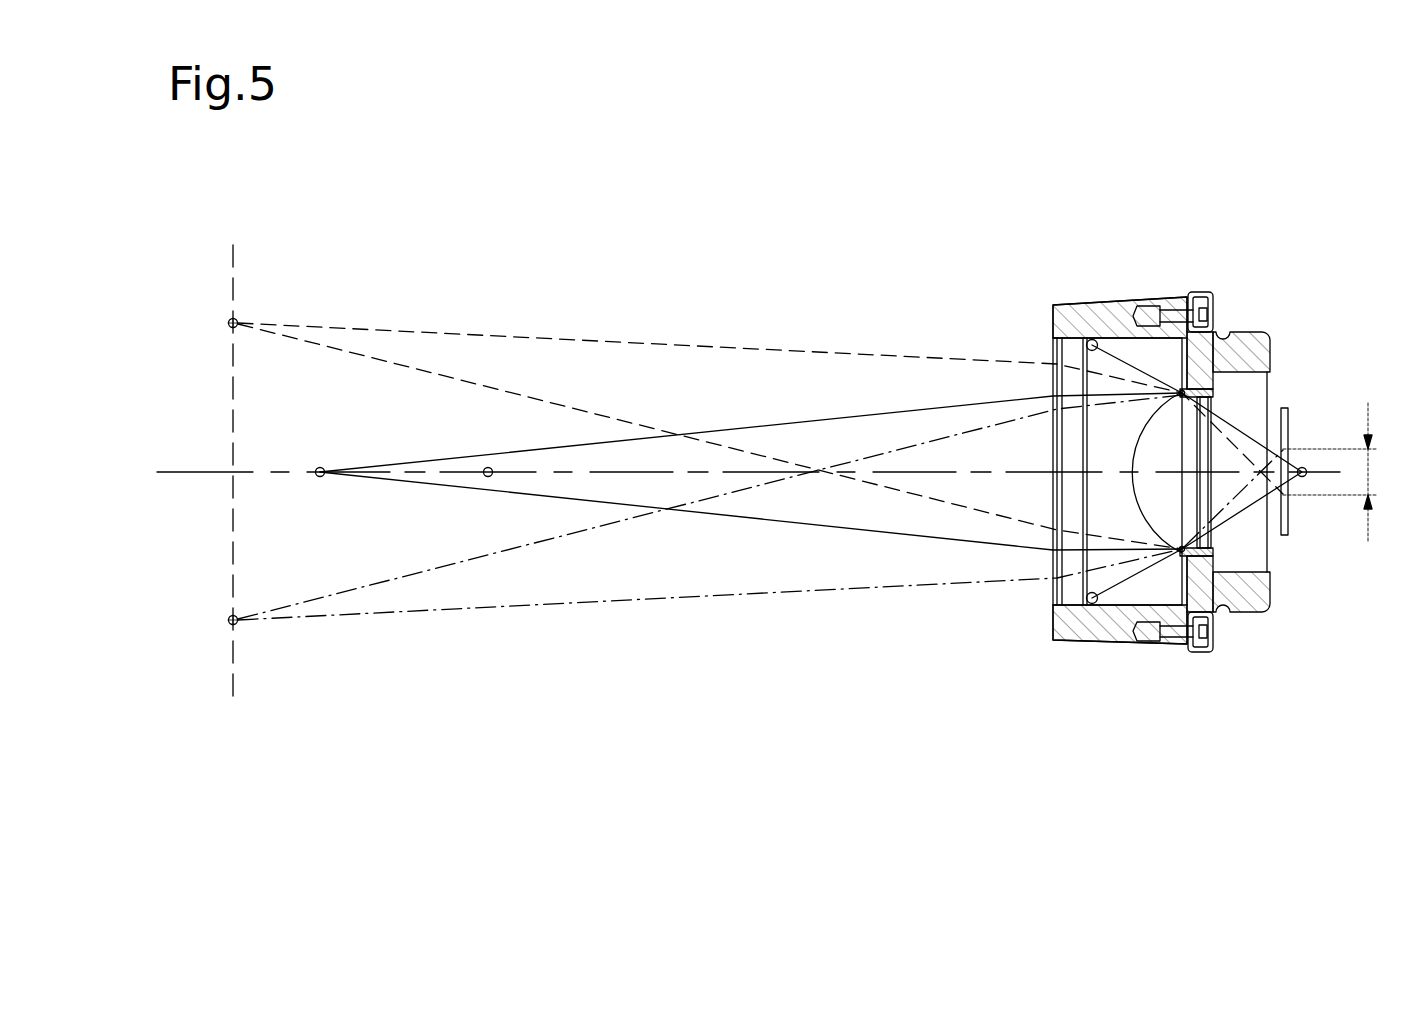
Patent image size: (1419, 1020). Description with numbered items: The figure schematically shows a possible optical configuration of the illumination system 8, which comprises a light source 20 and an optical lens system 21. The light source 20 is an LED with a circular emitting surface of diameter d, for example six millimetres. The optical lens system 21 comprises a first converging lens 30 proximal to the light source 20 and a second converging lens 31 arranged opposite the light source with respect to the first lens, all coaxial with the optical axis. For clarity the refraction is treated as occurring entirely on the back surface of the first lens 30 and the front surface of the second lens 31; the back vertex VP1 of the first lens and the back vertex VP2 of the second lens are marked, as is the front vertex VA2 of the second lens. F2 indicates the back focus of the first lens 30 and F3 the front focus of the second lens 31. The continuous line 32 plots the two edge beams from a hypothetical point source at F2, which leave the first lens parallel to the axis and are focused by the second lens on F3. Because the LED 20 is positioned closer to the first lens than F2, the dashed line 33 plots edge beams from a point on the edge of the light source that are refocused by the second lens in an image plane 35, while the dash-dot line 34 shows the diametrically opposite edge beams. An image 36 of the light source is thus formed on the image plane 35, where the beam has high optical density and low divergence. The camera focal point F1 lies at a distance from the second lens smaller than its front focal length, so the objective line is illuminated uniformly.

The illumination system 8 is at (967, 187).
The light source 20 is at (1277, 505).
The optical lens system 21 is at (1237, 655).
The first converging lens 30 is at (1172, 495).
The second converging lens 31 is at (1098, 498).
The continuous line 32 is at (925, 407).
The dashed line 33 is at (838, 351).
The dash-dot line 34 is at (555, 535).
The image plane 35 is at (234, 279).
The image of the light source 36 is at (232, 408).
The camera focal point F1 is at (488, 467).
The back focus of the first lens F2 is at (1302, 468).
The front focus of the second lens F3 is at (318, 477).
The front vertex of the second lens VA2 is at (1053, 472).
The back vertex of the first lens VP1 is at (1212, 470).
The back vertex of the second lens VP2 is at (1115, 470).
The diameter of the emitting surface d is at (1370, 473).